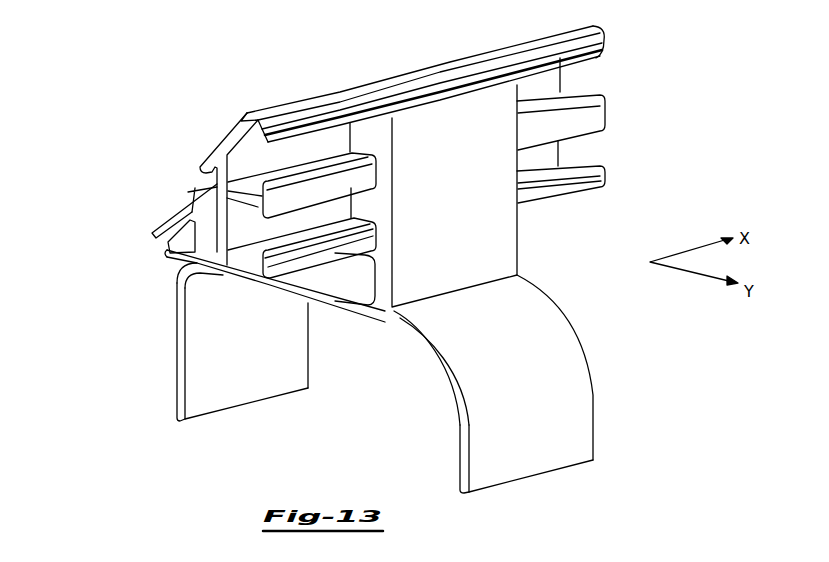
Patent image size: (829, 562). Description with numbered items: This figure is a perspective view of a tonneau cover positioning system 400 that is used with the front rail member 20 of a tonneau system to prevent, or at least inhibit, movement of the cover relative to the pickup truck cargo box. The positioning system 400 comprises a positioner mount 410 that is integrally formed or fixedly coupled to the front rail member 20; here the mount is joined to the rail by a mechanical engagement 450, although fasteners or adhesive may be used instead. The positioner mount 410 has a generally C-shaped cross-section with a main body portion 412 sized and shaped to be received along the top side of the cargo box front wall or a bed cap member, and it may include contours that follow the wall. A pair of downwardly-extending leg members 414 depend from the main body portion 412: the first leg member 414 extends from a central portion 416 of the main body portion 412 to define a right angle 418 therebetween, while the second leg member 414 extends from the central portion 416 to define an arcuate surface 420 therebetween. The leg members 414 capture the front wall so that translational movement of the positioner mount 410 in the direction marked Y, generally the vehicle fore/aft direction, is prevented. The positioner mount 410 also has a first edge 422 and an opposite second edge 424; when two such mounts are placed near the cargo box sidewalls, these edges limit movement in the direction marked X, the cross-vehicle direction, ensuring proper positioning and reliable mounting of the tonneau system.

The front rail member 20 is at (443, 60).
The mechanical engagement 450 is at (319, 81).
The tonneau cover positioning system 400 is at (101, 341).
The positioner mount 410 is at (548, 293).
The main body portion 412 is at (310, 355).
The leg members 414 is at (176, 388).
The central portion 416 is at (225, 284).
The right angle 418 is at (176, 282).
The arcuate surface 420 is at (594, 364).
The first edge 422 is at (385, 313).
The second edge 424 is at (519, 275).